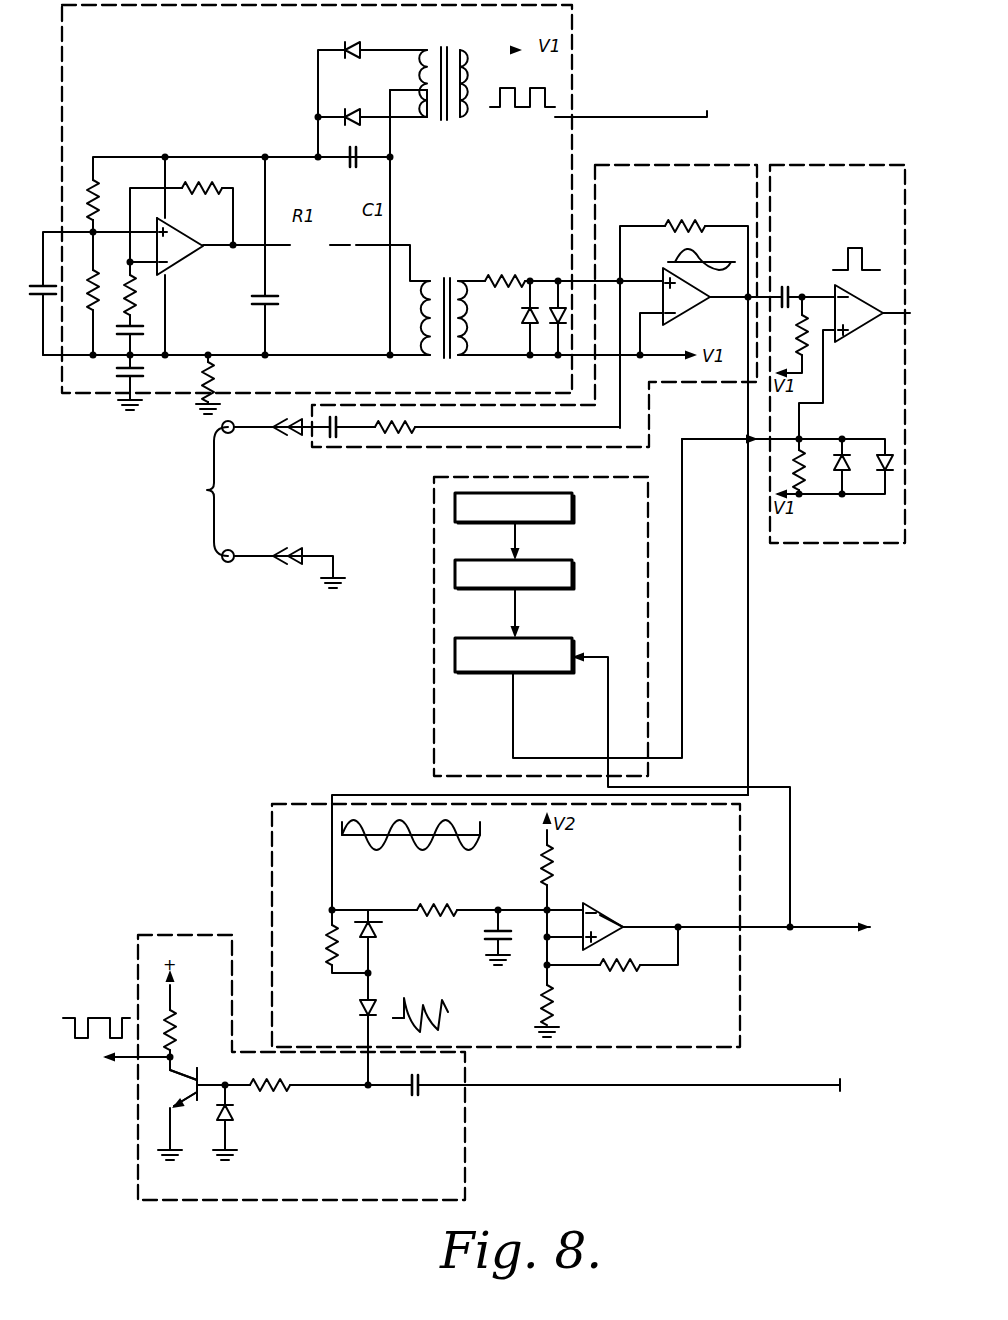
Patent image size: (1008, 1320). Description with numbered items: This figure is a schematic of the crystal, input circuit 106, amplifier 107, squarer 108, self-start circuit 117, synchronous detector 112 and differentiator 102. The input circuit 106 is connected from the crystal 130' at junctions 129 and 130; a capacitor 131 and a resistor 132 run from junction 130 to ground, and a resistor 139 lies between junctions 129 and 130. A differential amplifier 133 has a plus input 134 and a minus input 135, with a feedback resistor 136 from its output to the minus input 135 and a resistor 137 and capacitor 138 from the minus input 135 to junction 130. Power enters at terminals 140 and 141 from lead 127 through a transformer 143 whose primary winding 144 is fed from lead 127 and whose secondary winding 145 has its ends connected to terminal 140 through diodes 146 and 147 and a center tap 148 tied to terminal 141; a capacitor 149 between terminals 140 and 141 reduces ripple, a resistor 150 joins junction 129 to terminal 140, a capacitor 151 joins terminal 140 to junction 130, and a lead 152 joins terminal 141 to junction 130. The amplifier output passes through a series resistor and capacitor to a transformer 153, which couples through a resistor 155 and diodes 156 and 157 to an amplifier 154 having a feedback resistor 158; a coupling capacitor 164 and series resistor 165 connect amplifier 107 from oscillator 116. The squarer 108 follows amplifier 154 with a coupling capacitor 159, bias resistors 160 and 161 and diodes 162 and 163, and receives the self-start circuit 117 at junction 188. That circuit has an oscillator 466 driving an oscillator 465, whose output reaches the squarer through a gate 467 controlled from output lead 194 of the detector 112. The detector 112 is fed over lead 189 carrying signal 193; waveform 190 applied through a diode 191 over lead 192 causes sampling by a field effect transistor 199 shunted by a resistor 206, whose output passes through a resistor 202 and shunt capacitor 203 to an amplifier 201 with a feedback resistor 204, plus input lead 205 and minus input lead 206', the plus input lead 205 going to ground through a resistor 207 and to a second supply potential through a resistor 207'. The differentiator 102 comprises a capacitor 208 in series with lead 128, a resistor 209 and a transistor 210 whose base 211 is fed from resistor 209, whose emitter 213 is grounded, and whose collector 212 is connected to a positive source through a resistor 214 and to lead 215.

The input circuit 106 is at (580, 62).
The amplifier 107 is at (650, 163).
The squarer 108 is at (800, 163).
The synchronous detector 112 is at (748, 980).
The self-start circuit 117 is at (428, 714).
The differentiator 102 is at (472, 1144).
The oscillator 116 is at (208, 494).
The lead 127 is at (676, 116).
The lead 128 is at (742, 1085).
The junction 129 is at (80, 238).
The crystal 130' is at (40, 249).
The junction 130 is at (71, 371).
The capacitor 131 is at (142, 376).
The resistor 132 is at (216, 382).
The differential amplifier 133 is at (192, 256).
The plus input 134 is at (148, 222).
The minus input 135 is at (148, 262).
The feedback resistor 136 is at (218, 182).
The resistor 137 is at (137, 305).
The capacitor 138 is at (142, 332).
The resistor 139 is at (88, 285).
The power input terminal 140 is at (316, 156).
The power input terminal 141 is at (394, 160).
The transformer 143 is at (439, 39).
The primary winding 144 is at (470, 76).
The secondary winding 145 is at (420, 105).
The diode 146 is at (366, 48).
The diode 147 is at (350, 108).
The center tap 148 is at (424, 86).
The capacitor 149 is at (358, 165).
The resistor 150 is at (100, 195).
The capacitor 151 is at (278, 306).
The lead 152 is at (392, 212).
The transformer 153 is at (450, 270).
The amplifier 154 is at (684, 318).
The resistor 155 is at (510, 274).
The diode 156 is at (524, 316).
The diode 157 is at (552, 328).
The feedback resistor 158 is at (704, 208).
The coupling capacitor 159 is at (787, 287).
The bias resistor 160 is at (808, 338).
The bias resistor 161 is at (806, 476).
The diode 162 is at (836, 462).
The diode 163 is at (878, 466).
The coupling capacitor 164 is at (336, 417).
The series resistor 165 is at (408, 418).
The junction 188 is at (802, 436).
The lead 189 is at (750, 690).
The waveform 190 is at (432, 1030).
The diode 191 is at (356, 1008).
The lead 192 is at (362, 1035).
The signal 193 is at (482, 838).
The output lead 194 is at (735, 920).
The field effect transistor 199 is at (382, 937).
The amplifier 201 is at (618, 914).
The resistor 202 is at (444, 900).
The shunt capacitor 203 is at (484, 937).
The feedback resistor 204 is at (628, 972).
The plus input lead 205 is at (552, 950).
The resistor 206 is at (309, 952).
The minus input lead 206' is at (600, 913).
The resistor 207 is at (572, 1005).
The resistor 207' is at (573, 862).
The capacitor 208 is at (418, 1095).
The resistor 209 is at (284, 1092).
The transistor 210 is at (216, 1076).
The base 211 is at (219, 1100).
The collector 212 is at (176, 1068).
The emitter 213 is at (198, 1092).
The resistor 214 is at (176, 1026).
The lead 215 is at (132, 1060).
The oscillator 465 is at (575, 577).
The oscillator 466 is at (575, 511).
The gate 467 is at (574, 640).